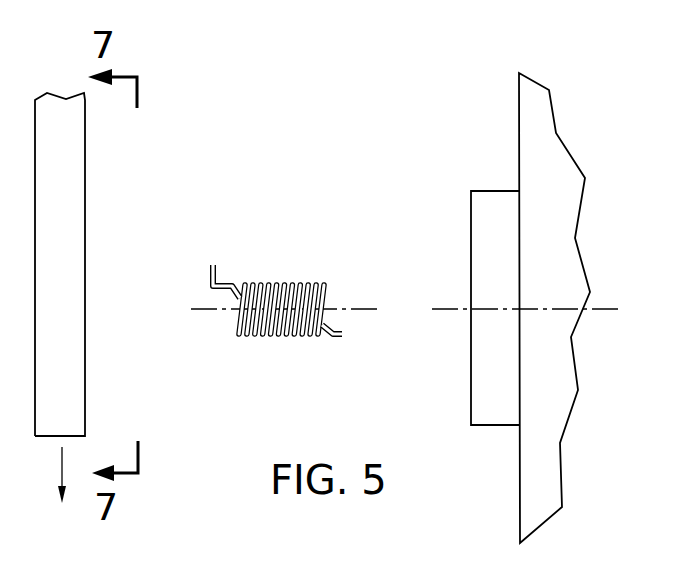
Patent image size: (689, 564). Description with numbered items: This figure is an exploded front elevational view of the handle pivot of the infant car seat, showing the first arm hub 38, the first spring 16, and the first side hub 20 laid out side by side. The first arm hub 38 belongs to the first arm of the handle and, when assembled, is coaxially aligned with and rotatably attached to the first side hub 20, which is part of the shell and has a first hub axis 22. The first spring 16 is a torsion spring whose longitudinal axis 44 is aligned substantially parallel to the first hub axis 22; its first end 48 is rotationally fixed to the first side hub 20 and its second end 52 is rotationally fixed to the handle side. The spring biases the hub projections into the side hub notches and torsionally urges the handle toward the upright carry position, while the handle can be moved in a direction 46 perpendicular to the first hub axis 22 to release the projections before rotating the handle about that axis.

The first spring 16 is at (275, 250).
The first side hub 20 is at (494, 195).
The first hub axis 22 is at (564, 306).
The first arm hub 38 is at (86, 397).
The longitudinal axis 44 is at (213, 312).
The direction 46 is at (60, 468).
The first end 48 is at (333, 338).
The second end 52 is at (209, 270).